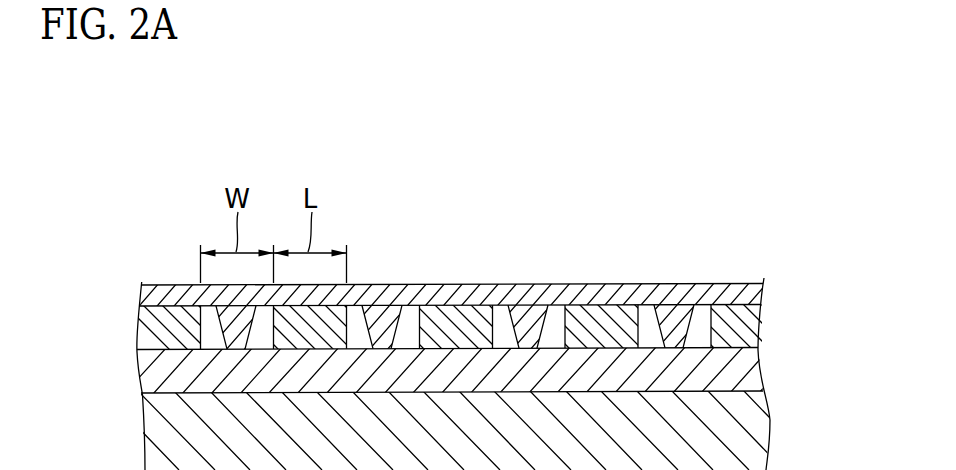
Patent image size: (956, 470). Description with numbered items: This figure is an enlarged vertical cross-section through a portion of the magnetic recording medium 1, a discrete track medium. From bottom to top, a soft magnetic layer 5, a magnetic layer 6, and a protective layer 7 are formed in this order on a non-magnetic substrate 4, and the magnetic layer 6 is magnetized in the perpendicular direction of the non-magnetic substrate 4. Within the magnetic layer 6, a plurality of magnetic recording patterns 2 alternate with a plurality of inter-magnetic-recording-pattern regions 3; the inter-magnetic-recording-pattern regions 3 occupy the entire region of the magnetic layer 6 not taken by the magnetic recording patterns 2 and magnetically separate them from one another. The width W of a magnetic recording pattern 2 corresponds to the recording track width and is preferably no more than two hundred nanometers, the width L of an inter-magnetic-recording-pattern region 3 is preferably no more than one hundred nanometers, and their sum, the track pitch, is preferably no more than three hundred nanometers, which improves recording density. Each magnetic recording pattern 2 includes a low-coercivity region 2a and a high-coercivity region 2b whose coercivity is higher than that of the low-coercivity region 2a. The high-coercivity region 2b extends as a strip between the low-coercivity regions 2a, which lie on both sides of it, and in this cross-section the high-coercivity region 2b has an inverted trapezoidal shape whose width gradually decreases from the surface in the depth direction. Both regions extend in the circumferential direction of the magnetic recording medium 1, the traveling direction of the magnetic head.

The magnetic recording medium 1 is at (461, 271).
The magnetic recording pattern 2 is at (447, 190).
The low-coercivity region 2a is at (557, 323).
The high-coercivity region 2b is at (528, 322).
The inter-magnetic-recording-pattern region 3 is at (604, 320).
The non-magnetic substrate 4 is at (732, 425).
The soft magnetic layer 5 is at (737, 367).
The magnetic layer 6 is at (446, 247).
The protective layer 7 is at (743, 291).